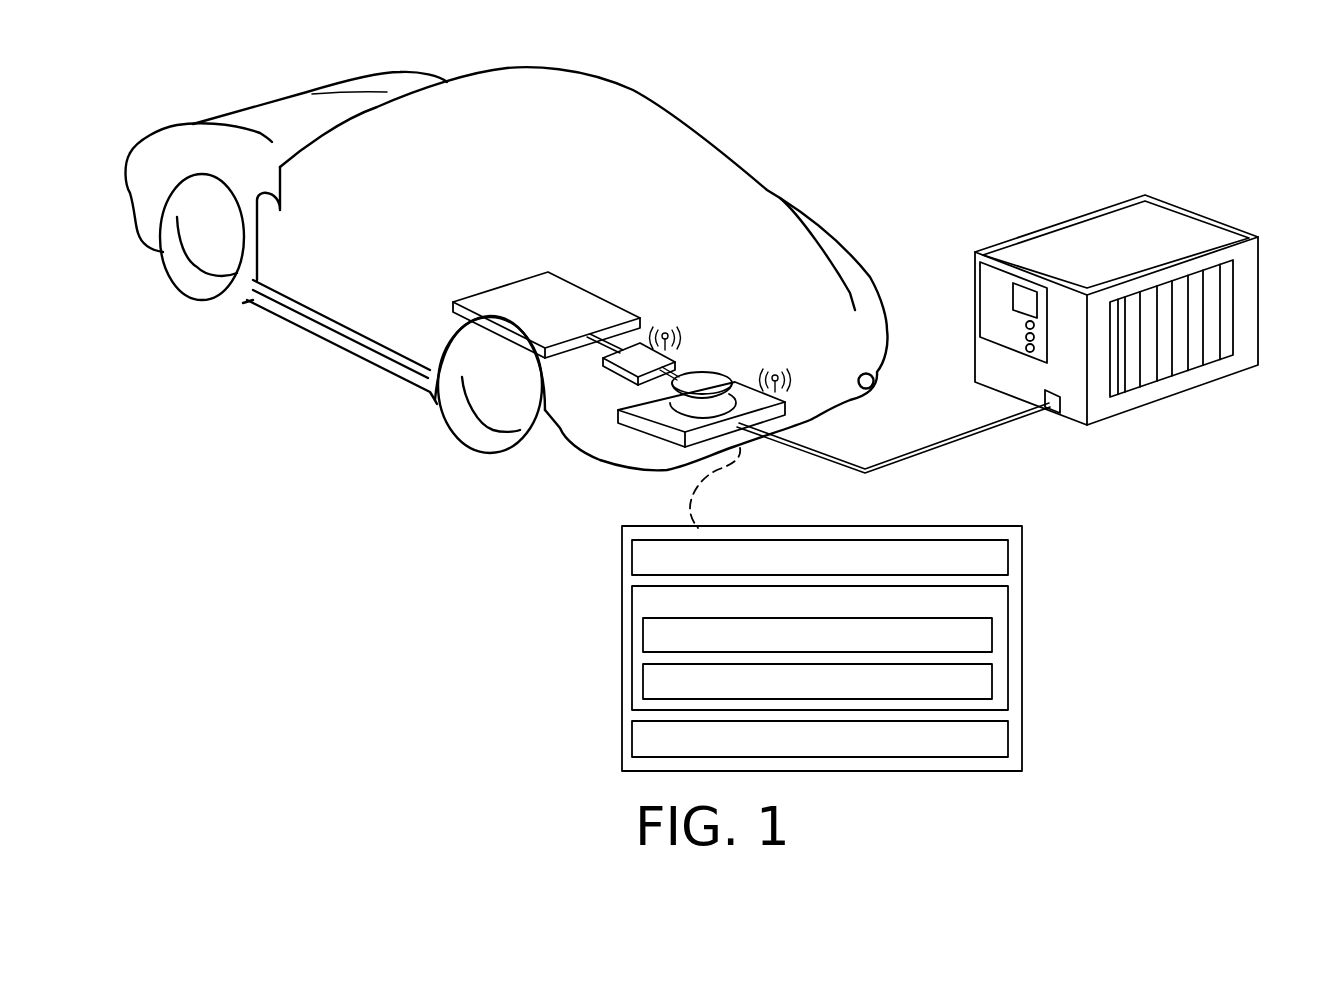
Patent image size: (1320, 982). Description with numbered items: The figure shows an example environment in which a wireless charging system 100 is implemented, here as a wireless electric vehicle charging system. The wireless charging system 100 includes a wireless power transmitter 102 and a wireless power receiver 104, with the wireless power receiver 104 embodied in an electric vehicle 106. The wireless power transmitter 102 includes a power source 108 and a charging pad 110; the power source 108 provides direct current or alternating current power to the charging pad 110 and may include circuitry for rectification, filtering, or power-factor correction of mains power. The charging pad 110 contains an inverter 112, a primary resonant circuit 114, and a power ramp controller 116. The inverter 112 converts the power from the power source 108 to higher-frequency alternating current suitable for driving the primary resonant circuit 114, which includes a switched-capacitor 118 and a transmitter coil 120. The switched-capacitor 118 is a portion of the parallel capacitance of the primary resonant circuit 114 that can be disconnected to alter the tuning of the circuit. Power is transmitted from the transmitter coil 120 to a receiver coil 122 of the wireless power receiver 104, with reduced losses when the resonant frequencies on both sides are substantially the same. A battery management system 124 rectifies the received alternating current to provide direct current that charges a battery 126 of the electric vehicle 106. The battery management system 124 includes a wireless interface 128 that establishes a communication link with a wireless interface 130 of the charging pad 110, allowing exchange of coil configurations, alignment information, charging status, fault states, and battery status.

The wireless charging system 100 is at (1147, 107).
The wireless power transmitter 102 is at (998, 453).
The wireless power receiver 104 is at (604, 306).
The electric vehicle 106 is at (620, 90).
The power source 108 is at (1170, 397).
The charging pad 110 is at (653, 438).
The inverter 112 is at (820, 557).
The primary resonant circuit 114 is at (820, 648).
The power ramp controller 116 is at (820, 739).
The switched-capacitor 118 is at (817, 635).
The transmitter coil 120 is at (817, 681).
The receiver coil 122 is at (710, 372).
The battery management system 124 is at (620, 373).
The battery 126 is at (600, 297).
The wireless interface 128 is at (683, 327).
The wireless interface 130 is at (787, 393).